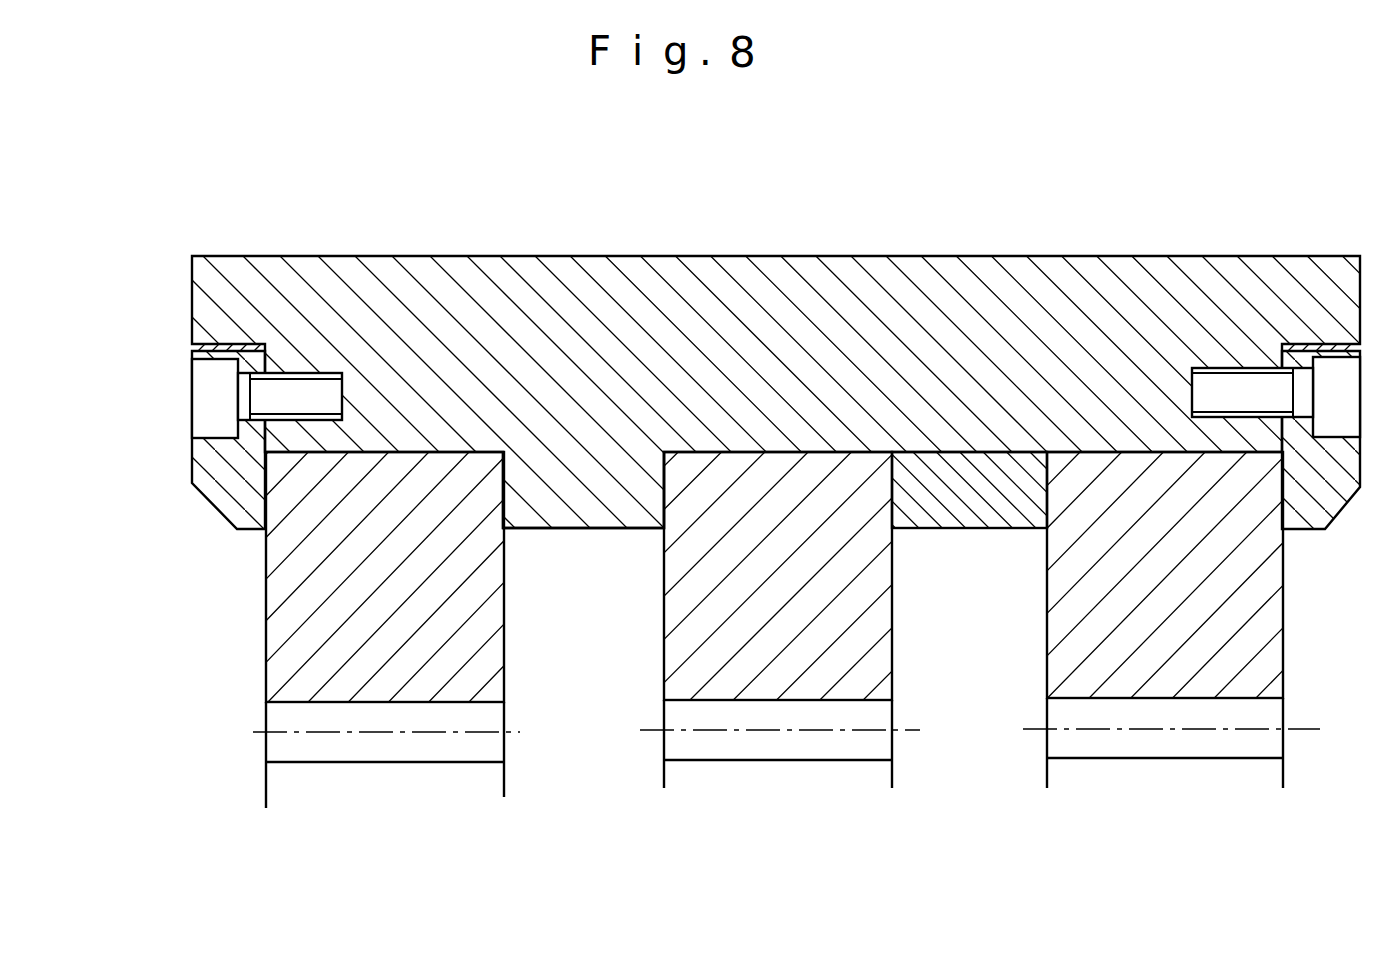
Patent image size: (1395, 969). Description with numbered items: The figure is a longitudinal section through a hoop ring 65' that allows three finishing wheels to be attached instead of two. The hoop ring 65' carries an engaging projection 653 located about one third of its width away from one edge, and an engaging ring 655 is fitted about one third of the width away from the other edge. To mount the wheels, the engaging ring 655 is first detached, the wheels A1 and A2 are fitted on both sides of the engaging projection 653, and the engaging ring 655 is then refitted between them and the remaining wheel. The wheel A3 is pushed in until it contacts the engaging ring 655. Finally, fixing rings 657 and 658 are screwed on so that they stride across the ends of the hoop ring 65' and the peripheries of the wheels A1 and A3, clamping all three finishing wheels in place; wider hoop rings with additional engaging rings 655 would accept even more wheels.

The hoop ring 65' is at (744, 353).
The engaging projection 653 is at (577, 507).
The engaging ring 655 is at (960, 507).
The fixing ring 657 is at (223, 490).
The fixing ring 658 is at (1323, 498).
The finishing wheel A1 is at (382, 783).
The finishing wheel A2 is at (773, 782).
The finishing wheel A3 is at (1147, 780).